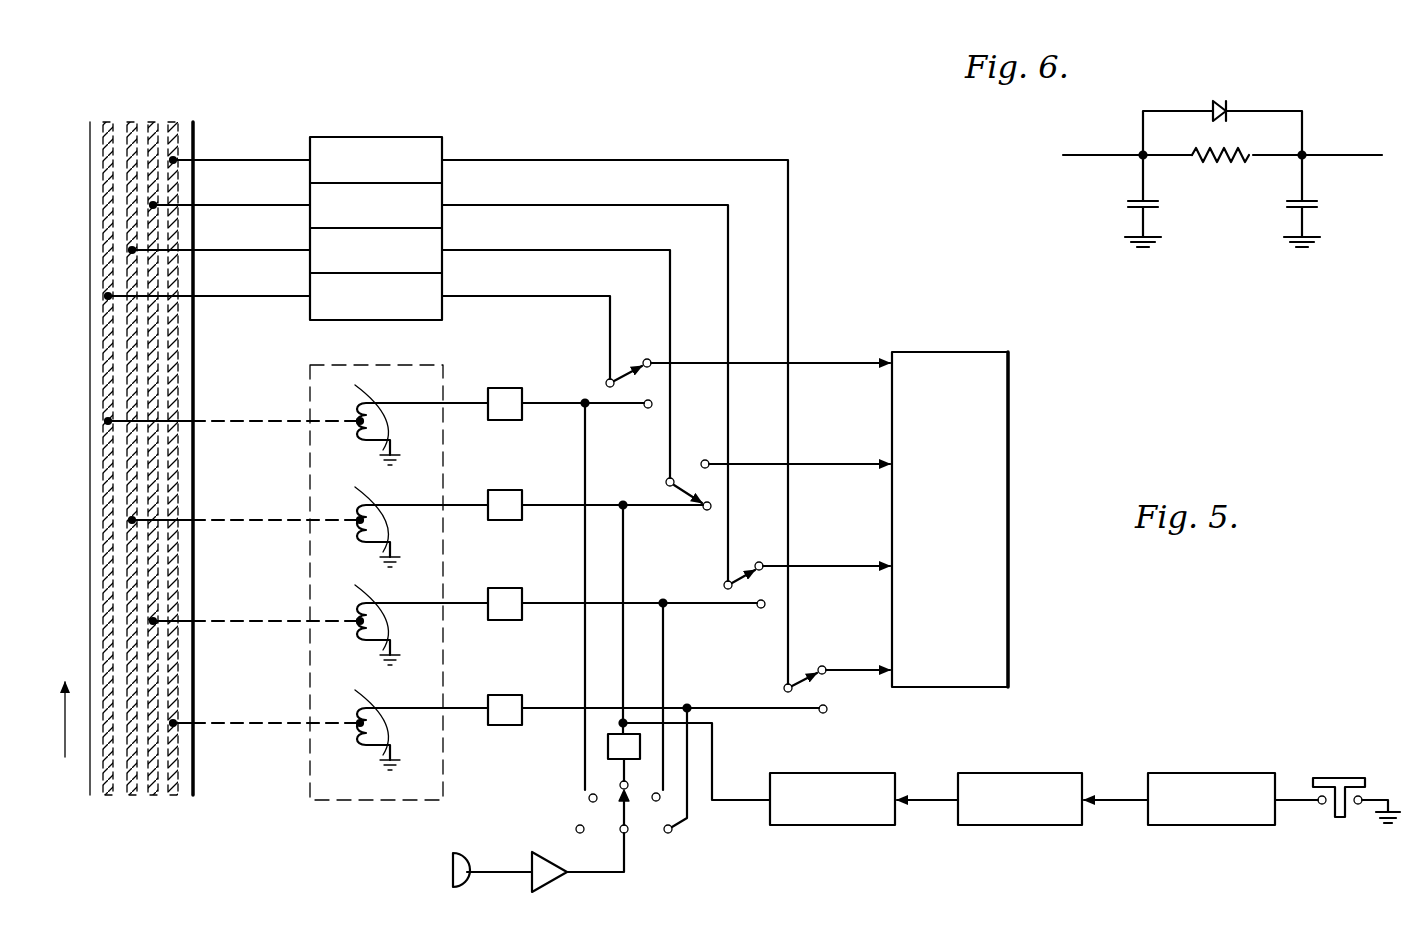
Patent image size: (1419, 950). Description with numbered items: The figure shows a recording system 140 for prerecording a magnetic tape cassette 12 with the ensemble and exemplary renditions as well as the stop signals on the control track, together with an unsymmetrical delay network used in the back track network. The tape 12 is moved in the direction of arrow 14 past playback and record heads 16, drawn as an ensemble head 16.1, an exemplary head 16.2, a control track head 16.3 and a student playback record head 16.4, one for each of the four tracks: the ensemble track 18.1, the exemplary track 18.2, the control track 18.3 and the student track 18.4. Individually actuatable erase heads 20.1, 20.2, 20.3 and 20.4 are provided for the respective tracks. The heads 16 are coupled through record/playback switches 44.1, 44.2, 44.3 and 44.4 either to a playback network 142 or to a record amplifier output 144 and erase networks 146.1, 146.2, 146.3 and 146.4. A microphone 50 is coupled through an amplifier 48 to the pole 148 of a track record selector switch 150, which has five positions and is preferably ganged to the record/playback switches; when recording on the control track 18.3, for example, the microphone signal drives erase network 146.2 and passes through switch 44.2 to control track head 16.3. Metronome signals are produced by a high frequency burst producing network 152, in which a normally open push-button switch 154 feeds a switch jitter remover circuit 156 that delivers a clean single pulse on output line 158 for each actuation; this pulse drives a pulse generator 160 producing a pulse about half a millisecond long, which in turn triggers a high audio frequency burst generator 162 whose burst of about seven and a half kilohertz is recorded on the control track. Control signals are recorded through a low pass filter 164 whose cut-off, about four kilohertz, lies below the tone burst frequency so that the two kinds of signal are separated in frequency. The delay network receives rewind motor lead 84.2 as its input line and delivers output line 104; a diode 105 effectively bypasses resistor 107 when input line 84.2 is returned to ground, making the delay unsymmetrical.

In FIG. 5, the magnetic tape cassette 12 is at (90, 602).
In FIG. 5, the arrow 14 is at (65, 757).
In FIG. 5, the playback and record heads 16 is at (400, 126).
In FIG. 5, the ensemble track head 16.1 is at (443, 146).
In FIG. 5, the exemplary track head 16.2 is at (443, 198).
In FIG. 5, the control track head 16.3 is at (443, 245).
In FIG. 5, the student playback record head 16.4 is at (443, 287).
In FIG. 5, the ensemble track 18.1 is at (176, 328).
In FIG. 5, the exemplary track 18.2 is at (152, 363).
In FIG. 5, the control track 18.3 is at (128, 380).
In FIG. 5, the student track 18.4 is at (106, 445).
In FIG. 5, the erase head 20.1 is at (375, 755).
In FIG. 5, the erase head 20.2 is at (375, 648).
In FIG. 5, the erase head 20.3 is at (375, 550).
In FIG. 5, the erase head 20.4 is at (375, 448).
In FIG. 5, the record/playback switch 44.1 is at (638, 389).
In FIG. 5, the record/playback switch 44.2 is at (698, 487).
In FIG. 5, the record/playback switch 44.3 is at (757, 589).
In FIG. 5, the record/playback switch 44.4 is at (815, 692).
In FIG. 5, the amplifier 48 is at (535, 890).
In FIG. 5, the microphone 50 is at (453, 889).
In FIG. 6, the rewind motor lead 84.2 is at (1340, 152).
In FIG. 6, the output line 104 is at (1082, 153).
In FIG. 6, the diode 105 is at (1222, 100).
In FIG. 6, the resistor 107 is at (1222, 166).
In FIG. 5, the recording system 140 is at (818, 290).
In FIG. 5, the playback network 142 is at (980, 350).
In FIG. 5, the record amplifier output 144 is at (608, 874).
In FIG. 5, the erase network 146.1 is at (502, 421).
In FIG. 5, the erase network 146.2 is at (508, 521).
In FIG. 5, the erase network 146.3 is at (502, 621).
In FIG. 5, the erase network 146.4 is at (502, 726).
In FIG. 5, the pole 148 is at (627, 812).
In FIG. 5, the track record selector switch 150 is at (653, 818).
In FIG. 5, the high frequency burst producing network 152 is at (1065, 750).
In FIG. 5, the push-button switch 154 is at (1367, 790).
In FIG. 5, the switch jitter remover circuit 156 is at (1238, 827).
In FIG. 5, the output line 158 is at (1123, 801).
In FIG. 5, the pulse generator 160 is at (1025, 827).
In FIG. 5, the high audio frequency burst generator 162 is at (848, 827).
In FIG. 5, the low pass filter 164 is at (607, 748).